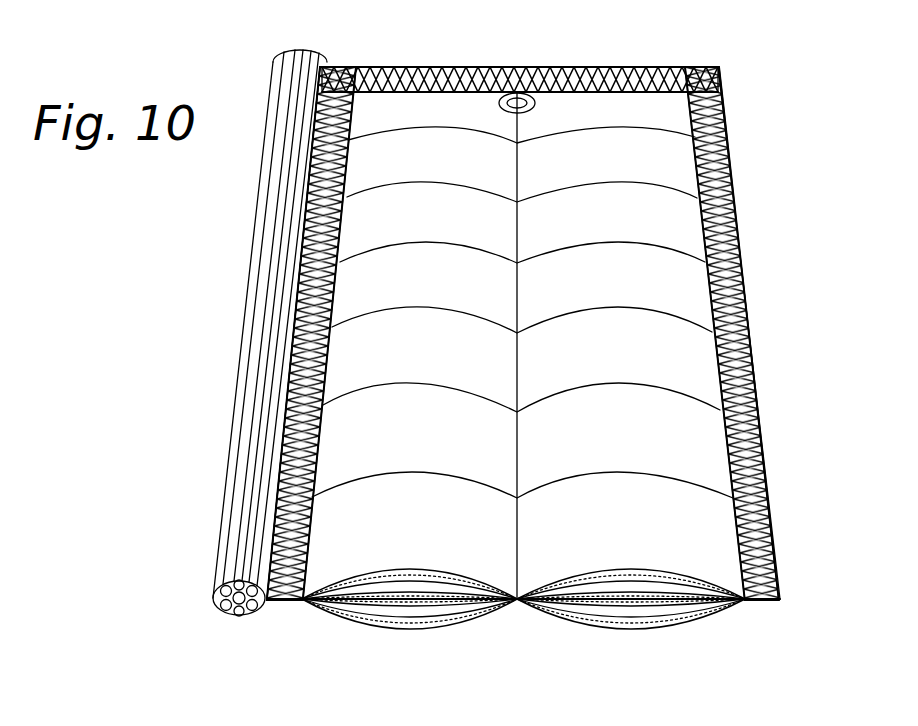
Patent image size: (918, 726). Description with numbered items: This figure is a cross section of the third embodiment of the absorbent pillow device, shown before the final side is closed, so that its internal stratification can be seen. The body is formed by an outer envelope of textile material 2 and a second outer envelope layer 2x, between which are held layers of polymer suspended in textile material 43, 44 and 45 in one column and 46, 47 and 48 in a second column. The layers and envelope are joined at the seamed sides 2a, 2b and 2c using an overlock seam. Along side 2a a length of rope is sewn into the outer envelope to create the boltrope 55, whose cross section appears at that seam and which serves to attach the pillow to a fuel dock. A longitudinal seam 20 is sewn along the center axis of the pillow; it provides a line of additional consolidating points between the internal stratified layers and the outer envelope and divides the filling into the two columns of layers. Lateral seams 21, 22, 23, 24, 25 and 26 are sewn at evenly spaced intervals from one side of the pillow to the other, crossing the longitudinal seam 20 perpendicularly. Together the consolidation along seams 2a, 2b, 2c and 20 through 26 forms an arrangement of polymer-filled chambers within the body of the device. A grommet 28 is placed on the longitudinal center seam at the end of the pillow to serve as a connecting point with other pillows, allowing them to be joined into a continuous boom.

The envelope 2 is at (717, 585).
The side seam 2a is at (293, 328).
The side seam 2b is at (470, 67).
The side seam 2c is at (733, 180).
The outer envelope layer 2x is at (703, 623).
The longitudinal seam 20 is at (515, 608).
The lateral seam 21 is at (390, 132).
The lateral seam 22 is at (388, 187).
The lateral seam 23 is at (383, 248).
The lateral seam 24 is at (375, 313).
The lateral seam 25 is at (373, 390).
The lateral seam 26 is at (362, 477).
The grommet 28 is at (535, 105).
The layer of polymer suspended in textile material 43 is at (338, 620).
The layer of polymer suspended in textile material 44 is at (380, 600).
The layer of polymer suspended in textile material 45 is at (418, 630).
The layer of polymer suspended in textile material 46 is at (677, 630).
The layer of polymer suspended in textile material 47 is at (628, 628).
The layer of polymer suspended in textile material 48 is at (583, 627).
The boltrope 55 is at (257, 390).